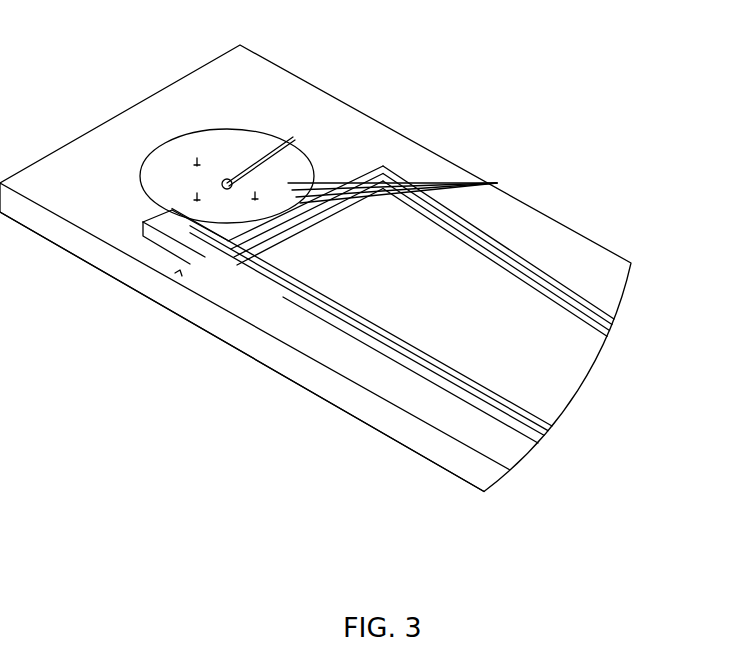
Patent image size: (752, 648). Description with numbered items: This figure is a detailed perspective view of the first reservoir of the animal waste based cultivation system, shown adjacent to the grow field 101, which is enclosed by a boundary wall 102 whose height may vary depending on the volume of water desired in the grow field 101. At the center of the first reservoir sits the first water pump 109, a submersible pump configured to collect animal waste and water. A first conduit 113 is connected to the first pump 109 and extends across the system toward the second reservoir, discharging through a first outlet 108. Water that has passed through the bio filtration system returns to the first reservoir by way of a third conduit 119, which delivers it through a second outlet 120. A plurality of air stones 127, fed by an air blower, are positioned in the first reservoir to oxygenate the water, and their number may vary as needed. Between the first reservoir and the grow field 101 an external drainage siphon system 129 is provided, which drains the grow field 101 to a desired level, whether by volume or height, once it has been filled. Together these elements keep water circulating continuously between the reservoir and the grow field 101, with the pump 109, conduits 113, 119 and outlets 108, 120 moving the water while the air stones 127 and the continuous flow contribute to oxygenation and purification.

The grow field 101 is at (450, 307).
The boundary wall 102 is at (443, 380).
The first outlet 108 is at (238, 136).
The first water pump 109 is at (288, 120).
The first conduit 113 is at (296, 138).
The third conduit 119 is at (175, 273).
The second outlet 120 is at (172, 210).
The air stones 127 is at (255, 192).
The external drainage siphon system 129 is at (497, 183).